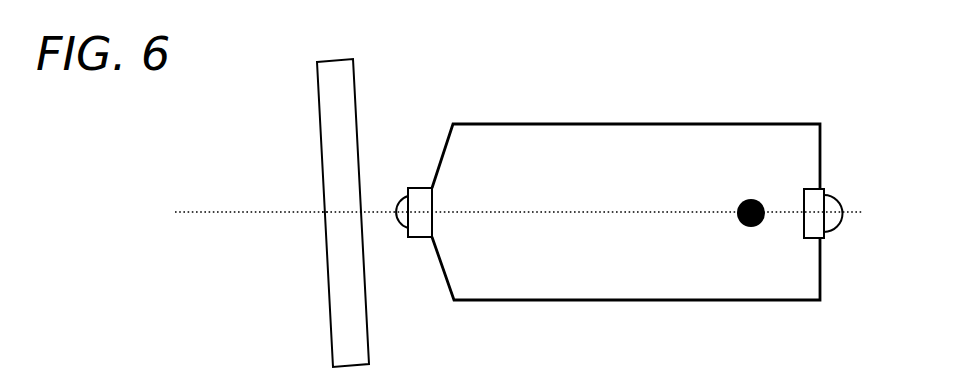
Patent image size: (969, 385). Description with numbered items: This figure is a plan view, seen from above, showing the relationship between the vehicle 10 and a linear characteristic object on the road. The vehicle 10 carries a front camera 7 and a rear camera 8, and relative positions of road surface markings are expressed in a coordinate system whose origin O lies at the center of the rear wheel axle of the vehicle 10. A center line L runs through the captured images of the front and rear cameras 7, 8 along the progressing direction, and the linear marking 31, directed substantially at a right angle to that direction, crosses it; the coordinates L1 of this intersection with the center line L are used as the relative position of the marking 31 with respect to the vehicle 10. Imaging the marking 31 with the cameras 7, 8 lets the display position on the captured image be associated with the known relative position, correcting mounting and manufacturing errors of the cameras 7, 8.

The transparent plate 31 is at (320, 62).
The center line L is at (201, 212).
The coordinates of intersection L1 is at (326, 212).
The front camera 7 is at (434, 190).
The vehicle 10 is at (820, 124).
The origin O is at (745, 203).
The rear camera 8 is at (806, 190).